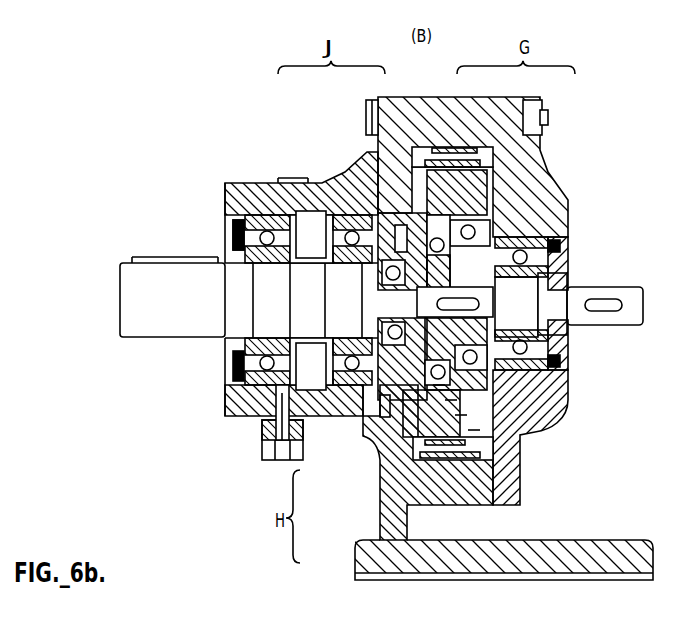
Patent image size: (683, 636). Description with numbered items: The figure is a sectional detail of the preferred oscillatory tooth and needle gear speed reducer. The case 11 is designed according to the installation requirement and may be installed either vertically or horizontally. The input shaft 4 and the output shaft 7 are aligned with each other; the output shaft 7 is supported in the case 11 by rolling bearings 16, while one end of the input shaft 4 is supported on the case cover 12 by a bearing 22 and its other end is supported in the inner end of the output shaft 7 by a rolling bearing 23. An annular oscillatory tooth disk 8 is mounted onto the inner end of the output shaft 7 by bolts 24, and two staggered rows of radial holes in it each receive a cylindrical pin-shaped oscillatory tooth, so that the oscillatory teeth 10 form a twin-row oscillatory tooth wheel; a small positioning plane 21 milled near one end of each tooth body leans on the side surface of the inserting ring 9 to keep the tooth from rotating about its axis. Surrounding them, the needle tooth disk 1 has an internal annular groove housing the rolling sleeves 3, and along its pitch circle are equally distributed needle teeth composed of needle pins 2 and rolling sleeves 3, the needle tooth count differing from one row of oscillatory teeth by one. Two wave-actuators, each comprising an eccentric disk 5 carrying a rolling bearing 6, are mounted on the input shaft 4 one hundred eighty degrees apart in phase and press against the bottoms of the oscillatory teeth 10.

The needle tooth disk 1 is at (490, 135).
The needle pins 2 is at (470, 152).
The rolling sleeves 3 is at (440, 147).
The input shaft 4 is at (452, 243).
The eccentric disk 5 is at (395, 198).
The rolling bearing 6 is at (340, 188).
The output shaft 7 is at (437, 390).
The oscillatory tooth disk 8 is at (447, 405).
The inserting ring 9 is at (457, 420).
The oscillatory teeth 10 is at (470, 432).
The case 11 is at (408, 508).
The case cover 12 is at (540, 430).
The rolling bearings 16 is at (330, 360).
The positioning plane 21 is at (500, 383).
The bearing 22 is at (568, 215).
The rolling bearing 23 is at (375, 250).
The bolts 24 is at (368, 205).